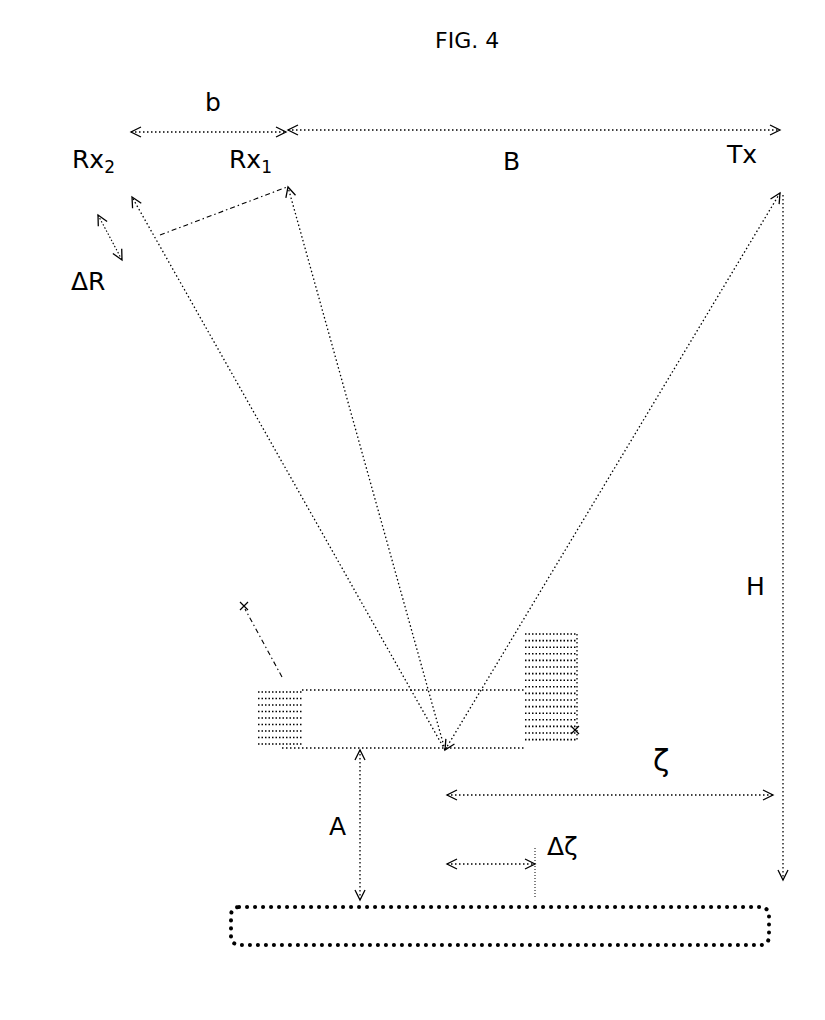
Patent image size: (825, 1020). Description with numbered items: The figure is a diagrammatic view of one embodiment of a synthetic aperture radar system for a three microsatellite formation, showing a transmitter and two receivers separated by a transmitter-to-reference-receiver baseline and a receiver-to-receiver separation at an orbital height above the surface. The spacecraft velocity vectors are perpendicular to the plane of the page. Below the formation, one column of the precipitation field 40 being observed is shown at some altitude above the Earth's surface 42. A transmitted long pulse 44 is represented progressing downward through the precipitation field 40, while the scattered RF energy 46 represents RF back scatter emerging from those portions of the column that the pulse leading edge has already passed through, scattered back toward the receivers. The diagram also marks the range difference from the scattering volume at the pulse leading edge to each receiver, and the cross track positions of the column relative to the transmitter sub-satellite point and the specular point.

The precipitation field 40 is at (450, 717).
The Earth's surface 42 is at (500, 928).
The transmitted long pulse 44 is at (573, 637).
The scattered RF energy 46 is at (243, 717).